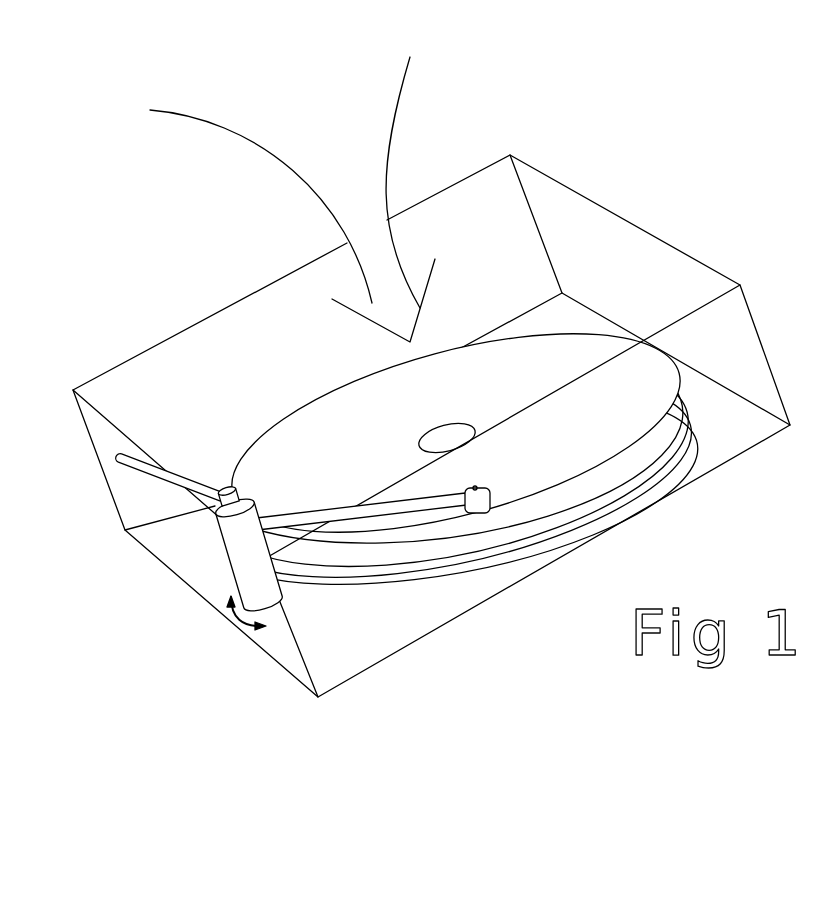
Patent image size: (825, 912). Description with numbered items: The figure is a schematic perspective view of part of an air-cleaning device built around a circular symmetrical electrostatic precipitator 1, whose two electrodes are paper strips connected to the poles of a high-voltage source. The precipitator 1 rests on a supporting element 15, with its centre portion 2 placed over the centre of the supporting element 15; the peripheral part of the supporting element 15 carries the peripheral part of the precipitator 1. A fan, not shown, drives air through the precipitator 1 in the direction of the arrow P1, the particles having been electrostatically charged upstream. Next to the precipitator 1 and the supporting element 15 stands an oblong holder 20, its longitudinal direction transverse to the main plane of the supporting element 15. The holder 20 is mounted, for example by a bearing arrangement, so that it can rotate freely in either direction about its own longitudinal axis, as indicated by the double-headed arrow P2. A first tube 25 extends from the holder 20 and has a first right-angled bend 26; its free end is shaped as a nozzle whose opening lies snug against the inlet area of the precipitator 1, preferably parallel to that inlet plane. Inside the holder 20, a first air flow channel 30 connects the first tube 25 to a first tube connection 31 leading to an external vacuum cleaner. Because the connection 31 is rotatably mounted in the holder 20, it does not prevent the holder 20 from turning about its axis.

The precipitator 1 is at (578, 323).
The centre portion 2 is at (447, 440).
The supporting element 15 is at (421, 603).
The holder 20 is at (225, 560).
The first tube 25 is at (358, 517).
The first right-angled bend 26 is at (490, 507).
The first air flow channel 30 is at (155, 473).
The first tube connection 31 is at (225, 502).
The arrow indicating air flow direction P1 is at (385, 172).
The double-headed arrow indicating holder rotation P2 is at (234, 623).